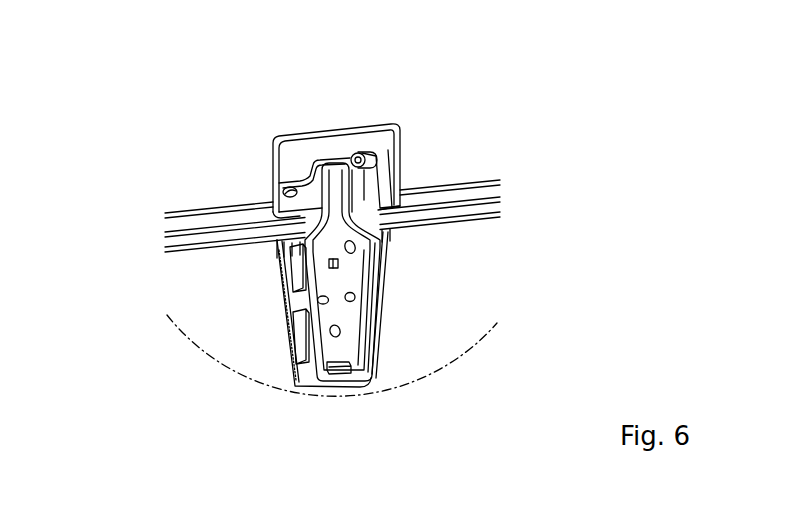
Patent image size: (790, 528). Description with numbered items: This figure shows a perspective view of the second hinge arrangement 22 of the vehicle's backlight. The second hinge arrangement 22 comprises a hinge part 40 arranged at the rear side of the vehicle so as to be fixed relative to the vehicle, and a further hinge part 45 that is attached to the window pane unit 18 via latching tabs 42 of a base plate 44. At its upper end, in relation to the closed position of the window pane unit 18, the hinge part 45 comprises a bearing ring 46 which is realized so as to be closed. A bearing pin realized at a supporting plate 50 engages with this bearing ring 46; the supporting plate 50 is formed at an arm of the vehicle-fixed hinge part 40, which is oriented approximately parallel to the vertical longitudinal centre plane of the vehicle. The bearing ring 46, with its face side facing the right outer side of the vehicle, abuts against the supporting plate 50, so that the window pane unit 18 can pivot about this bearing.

The window pane unit 18 is at (205, 282).
The hinge part 40 is at (287, 182).
The bearing ring 46 is at (356, 153).
The supporting plate 50 is at (376, 152).
The second hinge arrangement 22 is at (390, 253).
The latching tabs 42 is at (288, 277).
The base plate 44 is at (302, 378).
The hinge part 45 is at (360, 335).